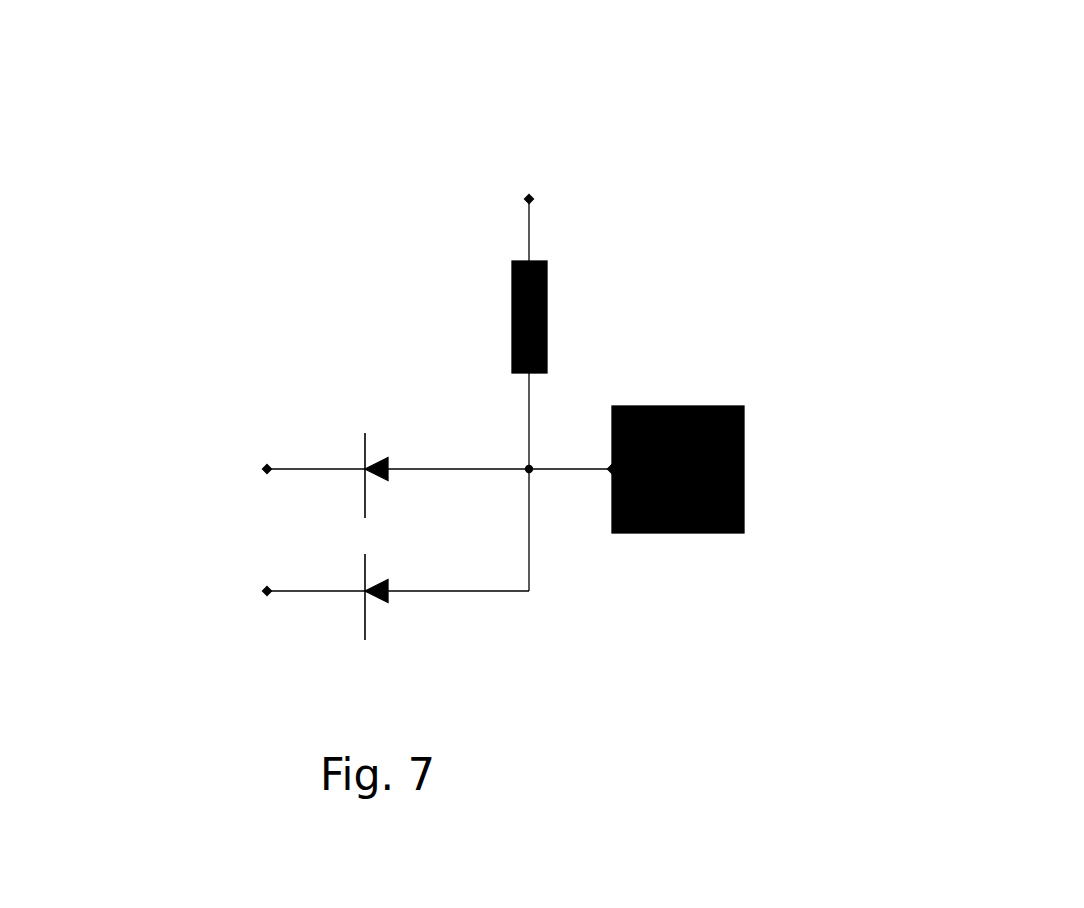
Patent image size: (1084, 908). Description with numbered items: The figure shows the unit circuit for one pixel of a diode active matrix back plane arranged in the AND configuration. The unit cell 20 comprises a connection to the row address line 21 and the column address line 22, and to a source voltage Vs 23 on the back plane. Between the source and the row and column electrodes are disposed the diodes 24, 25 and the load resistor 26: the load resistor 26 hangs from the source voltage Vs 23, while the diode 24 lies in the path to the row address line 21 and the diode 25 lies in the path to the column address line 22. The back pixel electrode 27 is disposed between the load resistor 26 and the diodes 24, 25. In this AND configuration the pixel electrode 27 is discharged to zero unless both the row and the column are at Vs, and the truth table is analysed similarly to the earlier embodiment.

The unit cell 20 is at (125, 71).
The row address line 21 is at (218, 469).
The column address line 22 is at (220, 591).
The source voltage Vs 23 is at (545, 177).
The diode 24 is at (352, 450).
The diode 25 is at (347, 617).
The load resistor 26 is at (573, 290).
The back pixel electrode 27 is at (712, 548).